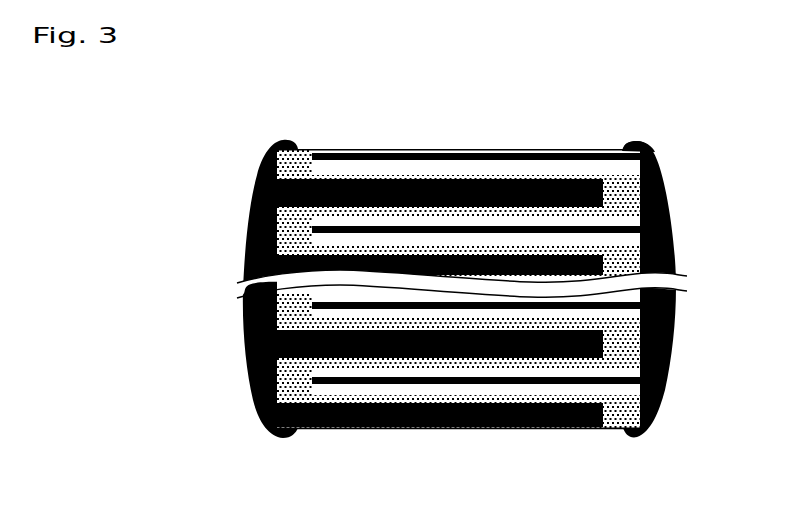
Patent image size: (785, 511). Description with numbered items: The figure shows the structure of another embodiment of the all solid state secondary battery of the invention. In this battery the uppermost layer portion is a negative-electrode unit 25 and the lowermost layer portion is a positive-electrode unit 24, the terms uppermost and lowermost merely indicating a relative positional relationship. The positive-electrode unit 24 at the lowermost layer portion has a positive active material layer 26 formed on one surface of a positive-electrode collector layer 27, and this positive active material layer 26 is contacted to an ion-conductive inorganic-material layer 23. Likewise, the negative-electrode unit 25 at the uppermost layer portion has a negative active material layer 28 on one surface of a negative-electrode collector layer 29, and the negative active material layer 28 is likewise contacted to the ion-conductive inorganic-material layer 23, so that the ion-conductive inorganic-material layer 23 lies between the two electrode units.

The ion-conductive inorganic-material layer 23 is at (283, 243).
The positive-electrode unit 24 is at (264, 416).
The negative-electrode unit 25 is at (653, 159).
The positive active material layer 26 is at (289, 436).
The positive-electrode collector layer 27 is at (367, 440).
The negative active material layer 28 is at (633, 155).
The negative-electrode collector layer 29 is at (589, 146).